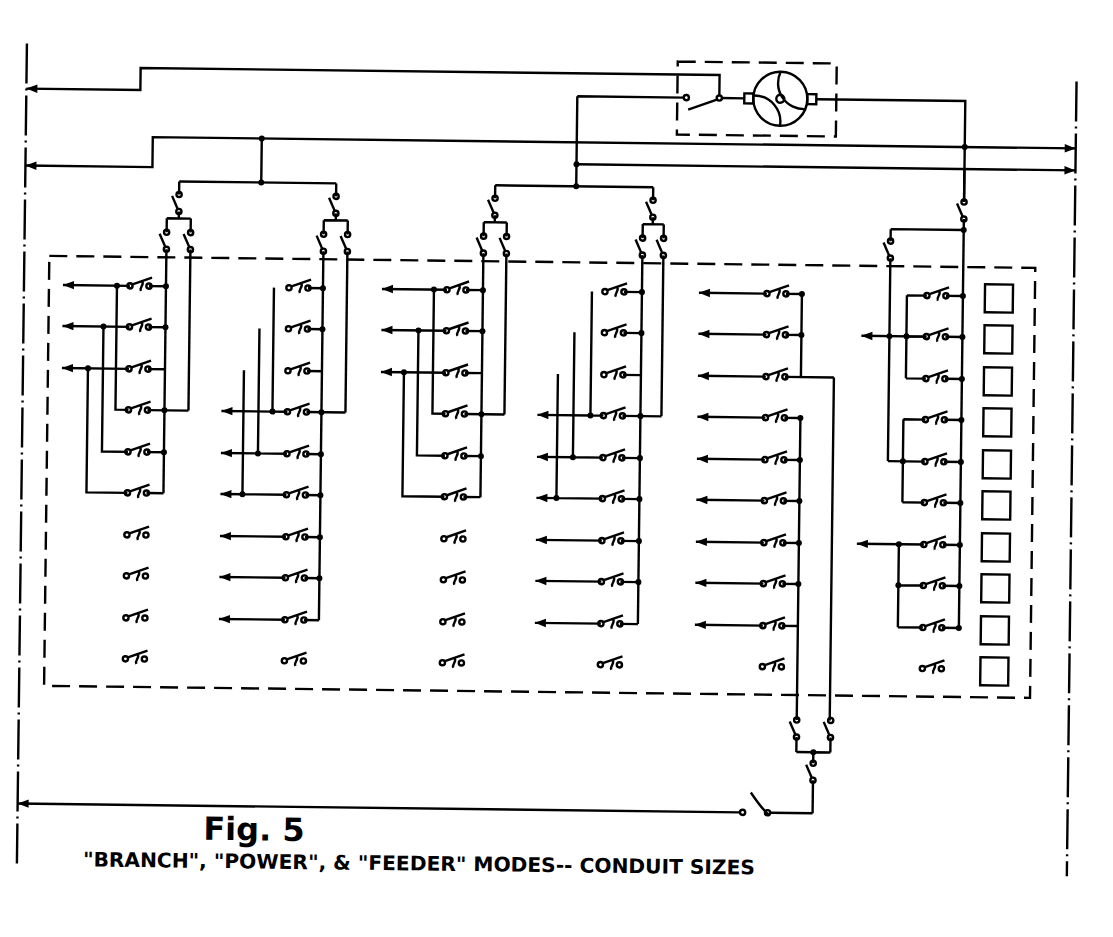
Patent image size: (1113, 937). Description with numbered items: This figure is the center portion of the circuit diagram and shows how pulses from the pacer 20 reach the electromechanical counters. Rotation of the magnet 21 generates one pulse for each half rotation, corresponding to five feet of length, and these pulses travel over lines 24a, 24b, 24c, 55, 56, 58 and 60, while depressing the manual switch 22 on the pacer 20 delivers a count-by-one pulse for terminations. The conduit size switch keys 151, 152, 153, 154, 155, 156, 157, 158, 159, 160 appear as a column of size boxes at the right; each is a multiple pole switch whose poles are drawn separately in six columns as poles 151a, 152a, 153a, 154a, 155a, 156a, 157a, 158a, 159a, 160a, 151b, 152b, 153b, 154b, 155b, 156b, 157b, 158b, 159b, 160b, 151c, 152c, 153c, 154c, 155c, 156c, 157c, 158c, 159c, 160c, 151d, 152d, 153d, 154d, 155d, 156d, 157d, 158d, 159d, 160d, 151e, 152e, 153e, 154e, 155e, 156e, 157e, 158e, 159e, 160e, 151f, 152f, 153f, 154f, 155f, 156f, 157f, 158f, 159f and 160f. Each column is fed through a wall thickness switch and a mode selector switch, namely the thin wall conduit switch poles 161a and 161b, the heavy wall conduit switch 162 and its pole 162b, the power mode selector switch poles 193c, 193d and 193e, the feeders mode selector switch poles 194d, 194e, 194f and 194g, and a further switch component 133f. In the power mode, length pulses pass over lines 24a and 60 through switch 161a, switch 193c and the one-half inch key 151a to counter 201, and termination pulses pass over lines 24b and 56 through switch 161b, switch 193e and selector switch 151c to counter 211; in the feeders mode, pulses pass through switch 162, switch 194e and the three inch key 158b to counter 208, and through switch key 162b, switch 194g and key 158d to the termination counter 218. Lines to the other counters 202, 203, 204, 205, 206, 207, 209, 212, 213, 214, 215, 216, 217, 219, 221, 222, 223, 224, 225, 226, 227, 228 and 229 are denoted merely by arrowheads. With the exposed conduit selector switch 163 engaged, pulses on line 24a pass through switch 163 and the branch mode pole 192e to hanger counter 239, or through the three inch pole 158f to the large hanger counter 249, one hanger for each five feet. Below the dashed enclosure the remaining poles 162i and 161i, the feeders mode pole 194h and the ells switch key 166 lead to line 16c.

The pacer 20 is at (836, 80).
The magnet 21 is at (803, 111).
The manual switch 22 is at (706, 108).
The line 24a is at (963, 118).
The line 24b is at (576, 119).
The line 24c is at (382, 74).
The line 55 is at (1017, 141).
The line 56 is at (962, 178).
The line 58 is at (1013, 165).
The line 60 is at (368, 143).
The output line 16c is at (58, 806).
The switch component 133f is at (637, 240).
The one-half inch conduit size switch key 151 is at (1011, 297).
The conduit size switch key 152 is at (1011, 338).
The conduit size switch key 153 is at (1011, 380).
The conduit size switch key 154 is at (1011, 421).
The conduit size switch key 155 is at (1011, 463).
The conduit size switch key 156 is at (1011, 504).
The conduit size switch key 157 is at (1011, 546).
The three inch conduit switch key 158 is at (1011, 587).
The conduit size switch key 159 is at (1011, 629).
The switch key 160 is at (1011, 670).
The one-half inch conduit size switch key pole 151a is at (144, 298).
The switch pole 152a is at (143, 339).
The switch pole 153a is at (143, 381).
The switch pole 154a is at (142, 422).
The switch pole 155a is at (142, 464).
The switch pole 156a is at (117, 505).
The switch pole 157a is at (117, 547).
The switch pole 158a is at (116, 588).
The switch pole 159a is at (116, 630).
The switch pole 160a is at (115, 668).
The switch pole 151b is at (300, 300).
The switch pole 152b is at (299, 341).
The switch pole 153b is at (299, 383).
The switch pole 154b is at (298, 424).
The switch pole 155b is at (290, 466).
The switch pole 156b is at (276, 507).
The switch pole 157b is at (276, 549).
The three inch conduit switch key pole 158b is at (275, 590).
The switch pole 159b is at (268, 632).
The switch pole 160b is at (265, 670).
The one-half inch conduit size selector switch pole 151c is at (458, 302).
The switch pole 152c is at (457, 343).
The switch pole 153c is at (457, 385).
The switch pole 154c is at (449, 426).
The switch pole 155c is at (441, 468).
The switch pole 156c is at (431, 509).
The switch pole 157c is at (430, 551).
The switch pole 158c is at (430, 592).
The switch pole 159c is at (429, 634).
The switch pole 160c is at (428, 672).
The switch pole 151d is at (619, 304).
The switch pole 152d is at (618, 345).
The switch pole 153d is at (618, 387).
The switch pole 154d is at (607, 428).
The switch pole 155d is at (598, 470).
The switch pole 156d is at (590, 511).
The switch pole 157d is at (589, 553).
The three inch conduit switch key pole 158d is at (589, 594).
The switch pole 159d is at (588, 636).
The switch pole 160d is at (585, 674).
The switch pole 151e is at (760, 306).
The switch pole 152e is at (759, 347).
The switch pole 153e is at (758, 389).
The switch pole 154e is at (758, 430).
The switch pole 155e is at (757, 472).
The switch pole 156e is at (755, 513).
The switch pole 157e is at (754, 555).
The switch pole 158e is at (754, 596).
The switch pole 159e is at (753, 638).
The switch pole 160e is at (747, 675).
The switch pole 151f is at (932, 308).
The switch pole 152f is at (931, 349).
The switch pole 153f is at (920, 391).
The switch pole 154f is at (930, 432).
The switch pole 155f is at (929, 474).
The switch pole 156f is at (918, 515).
The switch pole 157f is at (926, 557).
The three inch conduit size switch pole 158f is at (926, 598).
The switch pole 159f is at (916, 640).
The switch pole 160f is at (912, 678).
The thin wall conduit switch pole 161a is at (182, 200).
The thin wall conduit switch pole 161b is at (497, 200).
The thin wall conduit switch pole 161i is at (836, 722).
The heavy wall conduit switch 162 is at (352, 194).
The heavy wall conduit switch key pole 162b is at (655, 200).
The heavy wall conduit switch pole 162i is at (792, 722).
The exposed conduit selector switch 163 is at (966, 208).
The ells switch key 166 is at (764, 793).
The branch mode selector switch pole 192e is at (885, 250).
The power mode selector switch pole 193c is at (160, 246).
The power mode selector switch pole 193d is at (318, 248).
The power mode selector switch pole 193e is at (477, 248).
The feeders mode selector switch pole 194d is at (193, 246).
The feeders mode selector switch pole 194e is at (352, 248).
The feeders mode selector switch pole 194f is at (508, 247).
The feeders mode selector switch pole 194g is at (665, 246).
The feeders mode selector switch pole 194h is at (820, 776).
The electromechanical counter 201 is at (92, 275).
The electromechanical counter 202 is at (91, 316).
The electromechanical counter 203 is at (91, 358).
The electromechanical counter 204 is at (235, 401).
The electromechanical counter 205 is at (228, 443).
The electromechanical counter 206 is at (219, 484).
The electromechanical counter 207 is at (241, 526).
The electromechanical counter 208 is at (240, 567).
The electromechanical counter 209 is at (240, 609).
The electromechanical counter 211 is at (403, 279).
The electromechanical counter 212 is at (402, 320).
The electromechanical counter 213 is at (402, 362).
The electromechanical counter 214 is at (552, 405).
The electromechanical counter 215 is at (543, 447).
The electromechanical counter 216 is at (534, 488).
The electromechanical counter 217 is at (557, 530).
The three inch heavy wall termination counter 218 is at (556, 571).
The electromechanical counter 219 is at (556, 613).
The electromechanical counter 221 is at (723, 283).
The electromechanical counter 222 is at (722, 324).
The electromechanical counter 223 is at (722, 366).
The electromechanical counter 224 is at (721, 407).
The electromechanical counter 225 is at (721, 449).
The electromechanical counter 226 is at (720, 490).
The electromechanical counter 227 is at (720, 532).
The electromechanical counter 228 is at (719, 573).
The electromechanical counter 229 is at (719, 615).
The hanger counter 239 is at (878, 326).
The large hanger counter 249 is at (881, 535).